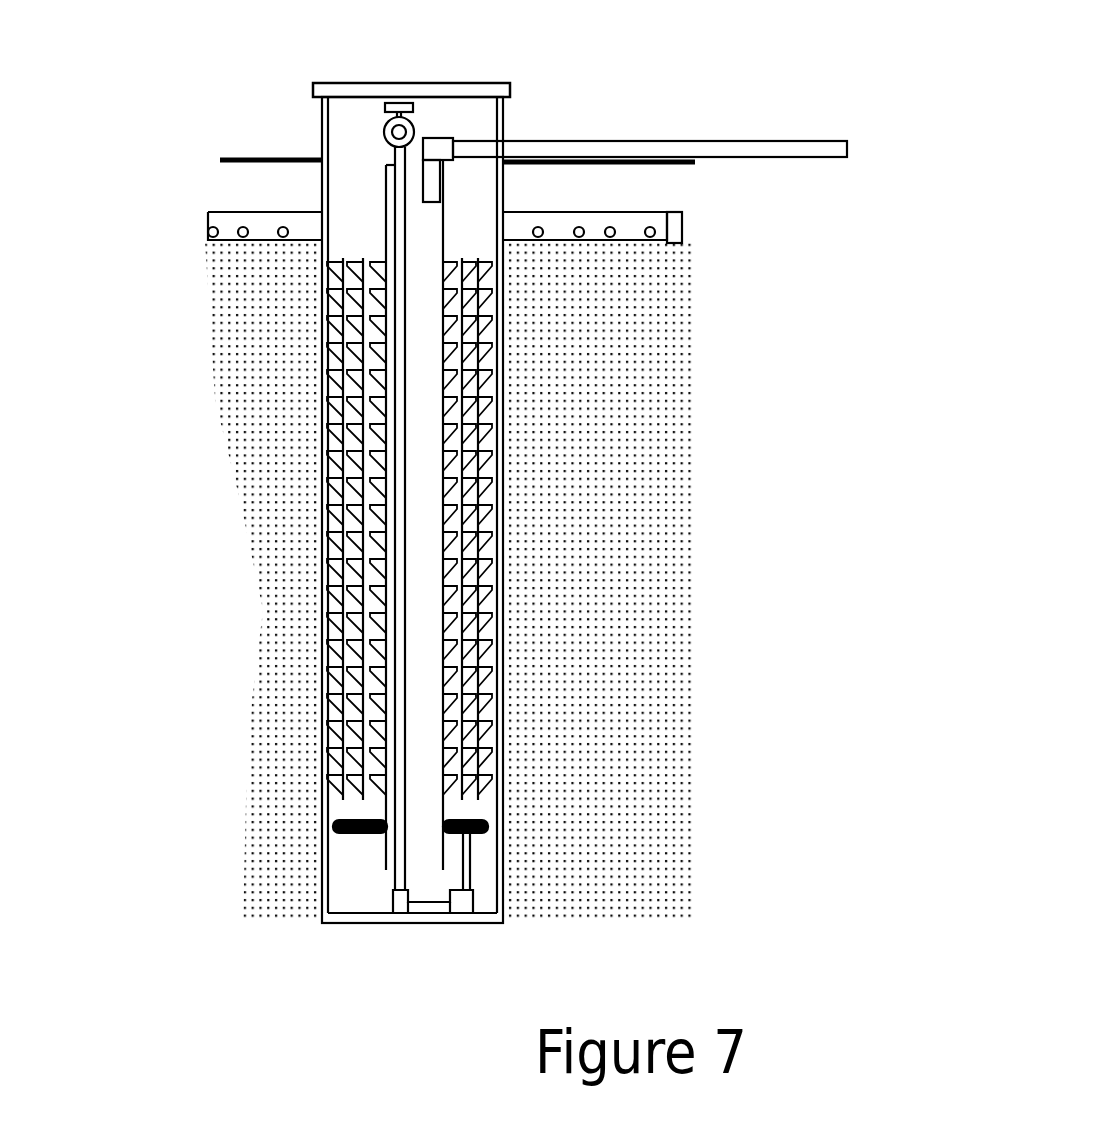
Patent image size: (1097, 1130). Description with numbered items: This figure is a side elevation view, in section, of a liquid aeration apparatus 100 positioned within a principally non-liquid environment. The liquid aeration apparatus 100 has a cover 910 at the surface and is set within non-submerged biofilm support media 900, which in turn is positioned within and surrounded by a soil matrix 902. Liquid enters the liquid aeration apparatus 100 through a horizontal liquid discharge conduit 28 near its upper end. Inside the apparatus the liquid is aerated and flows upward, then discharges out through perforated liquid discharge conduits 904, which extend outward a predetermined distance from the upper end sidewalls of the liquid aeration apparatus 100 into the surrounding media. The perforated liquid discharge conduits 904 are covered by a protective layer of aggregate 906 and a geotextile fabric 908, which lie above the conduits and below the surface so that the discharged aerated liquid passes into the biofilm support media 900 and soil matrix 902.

The horizontal liquid discharge conduit 28 is at (623, 138).
The liquid aeration apparatus 100 is at (300, 712).
The non-submerged biofilm support media 900 is at (270, 430).
The soil matrix 902 is at (763, 475).
The perforated liquid discharge conduits 904 is at (207, 232).
The protective layer of aggregate 906 is at (252, 188).
The geotextile fabric 908 is at (220, 160).
The cover 910 is at (377, 85).